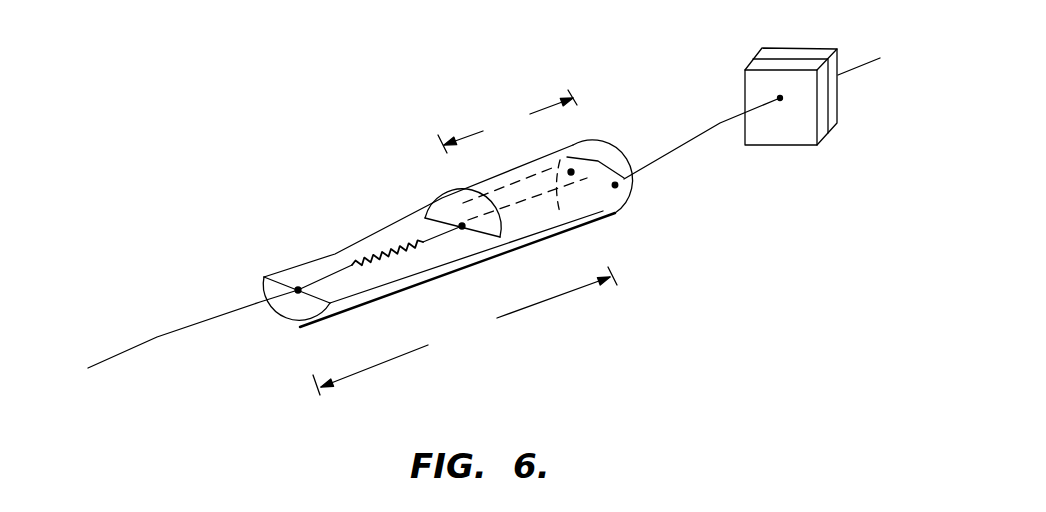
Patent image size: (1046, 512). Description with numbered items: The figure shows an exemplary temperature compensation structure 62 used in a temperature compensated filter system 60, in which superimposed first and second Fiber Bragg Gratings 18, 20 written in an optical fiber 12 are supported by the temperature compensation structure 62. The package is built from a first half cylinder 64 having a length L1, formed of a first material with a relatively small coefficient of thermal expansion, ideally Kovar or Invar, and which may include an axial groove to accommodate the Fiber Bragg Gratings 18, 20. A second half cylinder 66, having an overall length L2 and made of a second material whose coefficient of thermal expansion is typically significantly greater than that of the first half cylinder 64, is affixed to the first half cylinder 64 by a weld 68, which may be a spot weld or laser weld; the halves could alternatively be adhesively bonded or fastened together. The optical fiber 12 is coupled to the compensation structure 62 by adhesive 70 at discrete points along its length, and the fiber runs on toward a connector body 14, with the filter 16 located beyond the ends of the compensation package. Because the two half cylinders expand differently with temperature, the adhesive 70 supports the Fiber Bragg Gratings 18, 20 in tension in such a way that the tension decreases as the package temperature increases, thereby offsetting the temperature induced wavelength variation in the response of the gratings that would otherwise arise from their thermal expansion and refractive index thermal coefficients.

The optical fiber 12 is at (157, 335).
The connector body 14 is at (852, 65).
The filter 16 is at (818, 145).
The first Fiber Bragg Grating 18 is at (357, 258).
The second Fiber Bragg Grating 20 is at (380, 260).
The temperature compensated filter system 60 is at (160, 185).
The temperature compensation structure 62 is at (280, 105).
The first half cylinder 64 is at (287, 317).
The second half cylinder 66 is at (595, 140).
The weld 68 is at (624, 178).
The adhesive 70 is at (296, 287).
The length of first half cylinder L1 is at (465, 331).
The length of second half cylinder L2 is at (507, 121).